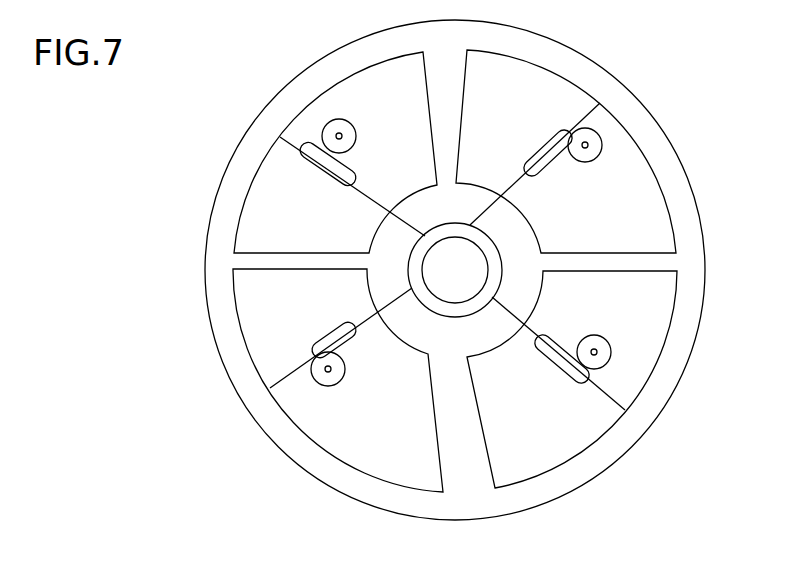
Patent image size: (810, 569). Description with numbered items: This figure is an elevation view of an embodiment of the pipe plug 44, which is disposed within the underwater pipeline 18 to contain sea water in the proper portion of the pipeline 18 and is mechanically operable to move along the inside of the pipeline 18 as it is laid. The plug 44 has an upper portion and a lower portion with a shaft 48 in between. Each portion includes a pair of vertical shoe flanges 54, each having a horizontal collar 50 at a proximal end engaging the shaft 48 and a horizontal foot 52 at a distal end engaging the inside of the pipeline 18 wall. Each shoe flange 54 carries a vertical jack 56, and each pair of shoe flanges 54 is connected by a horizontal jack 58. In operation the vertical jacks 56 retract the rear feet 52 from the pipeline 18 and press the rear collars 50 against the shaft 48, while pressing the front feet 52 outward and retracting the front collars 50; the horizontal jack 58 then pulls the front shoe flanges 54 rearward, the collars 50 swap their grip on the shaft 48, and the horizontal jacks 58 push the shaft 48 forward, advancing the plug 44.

The pipe plug 44 is at (697, 78).
The underwater pipeline 18 is at (213, 325).
The shaft 48 is at (450, 275).
The horizontal collar 50 is at (493, 243).
The horizontal foot 52 is at (455, 258).
The vertical shoe flange 54 is at (380, 88).
The vertical jack 56 is at (327, 168).
The horizontal jack 58 is at (325, 134).